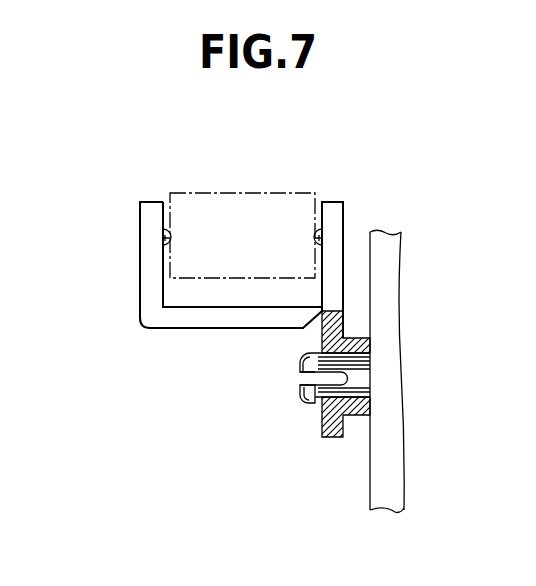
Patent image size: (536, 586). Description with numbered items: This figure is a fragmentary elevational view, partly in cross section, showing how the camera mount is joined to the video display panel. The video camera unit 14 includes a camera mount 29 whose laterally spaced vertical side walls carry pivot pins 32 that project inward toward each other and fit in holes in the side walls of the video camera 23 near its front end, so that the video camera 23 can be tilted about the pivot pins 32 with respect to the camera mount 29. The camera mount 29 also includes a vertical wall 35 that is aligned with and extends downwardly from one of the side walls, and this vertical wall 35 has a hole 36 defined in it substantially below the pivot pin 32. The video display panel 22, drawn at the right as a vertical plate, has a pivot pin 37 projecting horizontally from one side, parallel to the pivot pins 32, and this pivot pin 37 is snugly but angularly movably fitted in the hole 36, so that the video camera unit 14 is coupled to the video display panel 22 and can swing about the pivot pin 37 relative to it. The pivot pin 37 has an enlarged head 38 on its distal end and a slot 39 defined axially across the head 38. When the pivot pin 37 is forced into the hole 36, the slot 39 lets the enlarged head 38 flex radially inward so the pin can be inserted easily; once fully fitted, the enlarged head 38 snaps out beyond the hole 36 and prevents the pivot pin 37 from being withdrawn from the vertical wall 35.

The video camera unit 14 is at (134, 210).
The video display panel 22 is at (392, 455).
The video camera 23 is at (224, 193).
The camera mount 29 is at (198, 334).
The pivot pins 32 is at (166, 238).
The vertical wall 35 is at (328, 438).
The hole 36 is at (372, 367).
The pivot pin 37 is at (352, 377).
The enlarged head 38 is at (305, 404).
The slot 39 is at (304, 379).